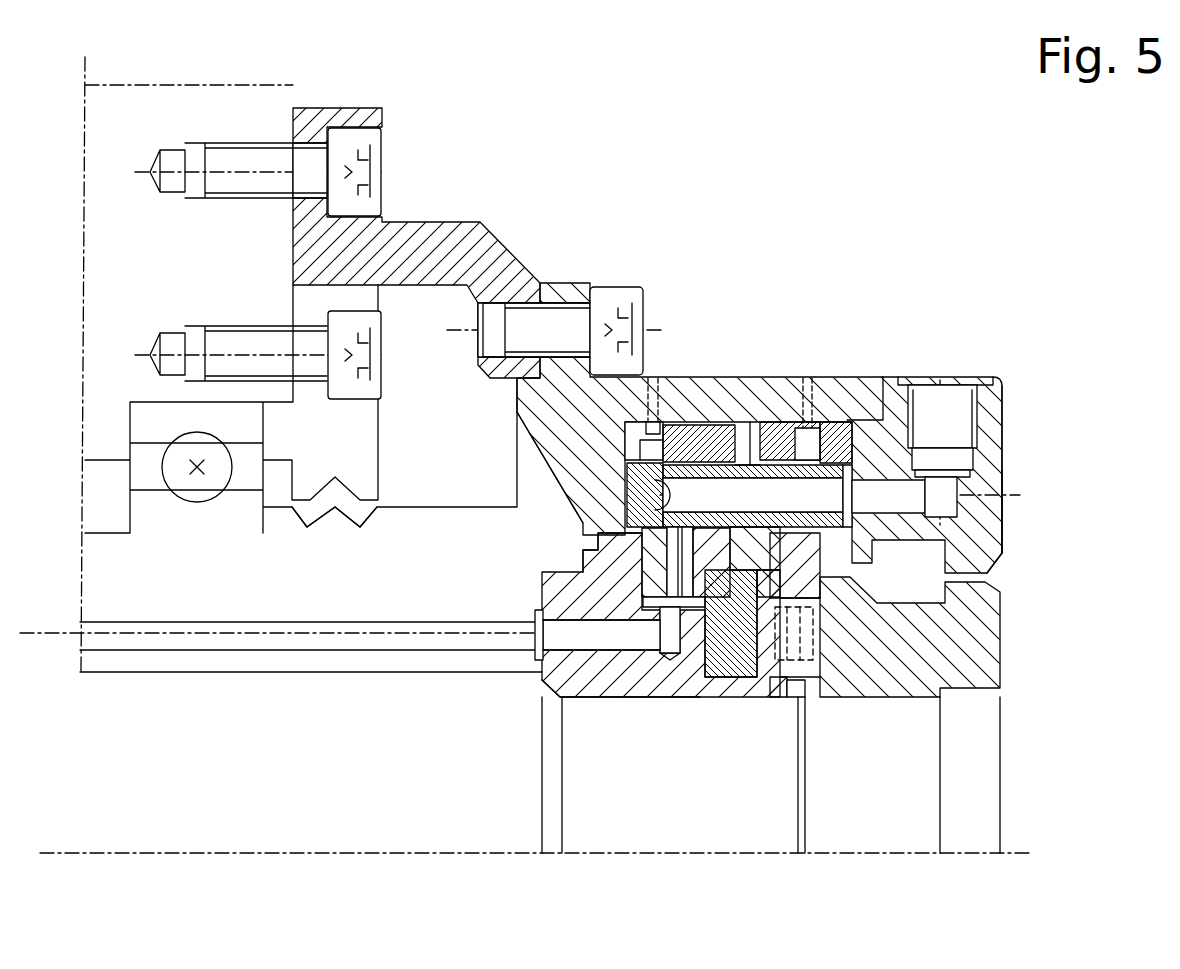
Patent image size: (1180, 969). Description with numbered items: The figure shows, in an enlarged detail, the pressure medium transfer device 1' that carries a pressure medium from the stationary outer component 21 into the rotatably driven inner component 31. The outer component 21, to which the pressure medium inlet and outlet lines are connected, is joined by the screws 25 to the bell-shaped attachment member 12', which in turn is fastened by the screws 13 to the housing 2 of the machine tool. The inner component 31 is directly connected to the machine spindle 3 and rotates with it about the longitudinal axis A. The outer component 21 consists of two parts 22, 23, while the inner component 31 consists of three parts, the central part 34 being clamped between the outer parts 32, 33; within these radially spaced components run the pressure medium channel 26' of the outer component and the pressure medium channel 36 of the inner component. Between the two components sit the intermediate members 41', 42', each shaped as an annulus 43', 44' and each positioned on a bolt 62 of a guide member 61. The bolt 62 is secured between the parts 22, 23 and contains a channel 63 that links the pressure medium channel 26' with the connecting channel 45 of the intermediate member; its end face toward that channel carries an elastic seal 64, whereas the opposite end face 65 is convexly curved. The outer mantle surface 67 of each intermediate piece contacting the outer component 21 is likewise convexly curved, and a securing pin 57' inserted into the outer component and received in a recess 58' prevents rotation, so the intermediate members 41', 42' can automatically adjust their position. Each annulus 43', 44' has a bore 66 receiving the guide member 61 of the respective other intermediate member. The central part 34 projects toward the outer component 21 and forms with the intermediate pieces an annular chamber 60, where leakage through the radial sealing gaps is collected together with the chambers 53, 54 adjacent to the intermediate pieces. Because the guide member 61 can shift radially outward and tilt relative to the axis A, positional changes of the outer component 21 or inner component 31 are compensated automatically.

The pressure medium transfer device 1' is at (788, 305).
The housing 2 is at (297, 100).
The machine spindle 3 is at (447, 507).
The bell-shaped attachment member 12' is at (441, 243).
The screws 13 is at (365, 143).
The stationary outer component 21 is at (1005, 460).
The part of the outer component 22 is at (643, 387).
The part of the outer component 23 is at (992, 500).
The screws 25 is at (608, 300).
The pressure medium channel 26' is at (1015, 377).
The rotatably driven inner component 31 is at (1003, 635).
The outer part of the inner component 32 is at (663, 655).
The outer part of the inner component 33 is at (832, 600).
The central part of the inner component 34 is at (715, 655).
The pressure medium channel 36 is at (570, 645).
The intermediate member 41' is at (606, 714).
The intermediate member 42' is at (843, 703).
The annulus 43' is at (534, 427).
The annulus 44' is at (813, 708).
The connecting channel 45 is at (690, 640).
The chamber 53 is at (600, 600).
The chamber 54 is at (917, 585).
The securing pin 57' is at (669, 321).
The recess 58' is at (703, 353).
The annular chamber 60 is at (795, 690).
The guide member 61 is at (780, 420).
The bolt 62 is at (815, 440).
The channel 63 is at (955, 413).
The elastic seal 64 is at (960, 542).
The end face 65 is at (653, 450).
The bore 66 is at (833, 422).
The outer mantle surface 67 is at (722, 440).
The longitudinal axis A is at (962, 853).